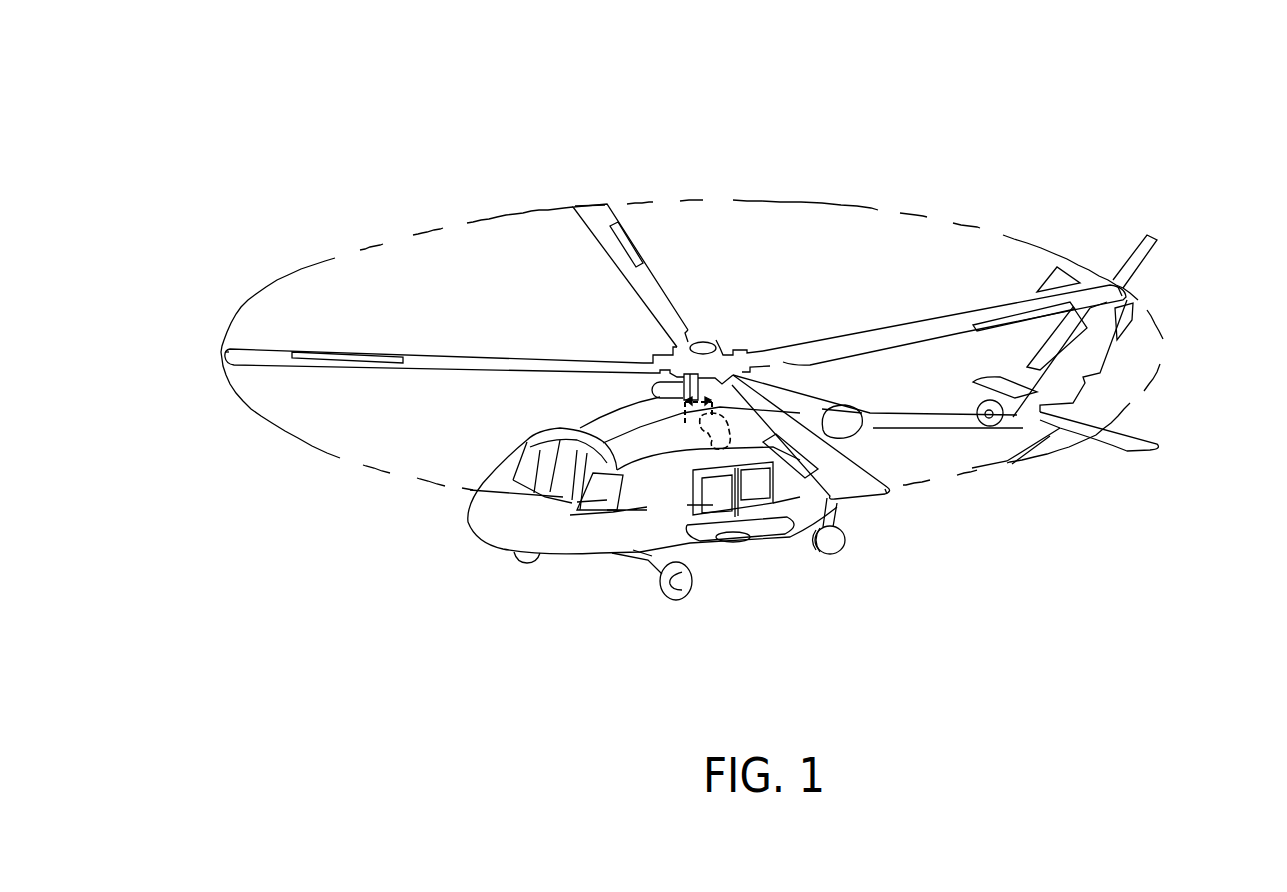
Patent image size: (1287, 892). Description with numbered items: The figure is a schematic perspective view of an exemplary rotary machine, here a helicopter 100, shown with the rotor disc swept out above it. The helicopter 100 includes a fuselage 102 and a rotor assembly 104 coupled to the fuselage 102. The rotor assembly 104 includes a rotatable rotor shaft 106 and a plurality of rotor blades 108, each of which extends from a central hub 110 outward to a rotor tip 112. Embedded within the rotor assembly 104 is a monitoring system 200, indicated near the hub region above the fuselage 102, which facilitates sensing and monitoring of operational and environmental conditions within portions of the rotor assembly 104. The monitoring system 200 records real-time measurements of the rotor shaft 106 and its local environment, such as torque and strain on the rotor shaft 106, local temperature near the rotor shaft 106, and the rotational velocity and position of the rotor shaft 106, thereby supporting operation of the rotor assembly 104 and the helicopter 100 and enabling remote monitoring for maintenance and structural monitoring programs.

The helicopter 100 is at (323, 131).
The fuselage 102 is at (500, 528).
The rotor assembly 104 is at (719, 334).
The rotor shaft 106 is at (665, 384).
The rotor blades 108 is at (268, 352).
The central hub 110 is at (703, 342).
The rotor tip 112 is at (218, 356).
The monitoring system 200 is at (674, 437).